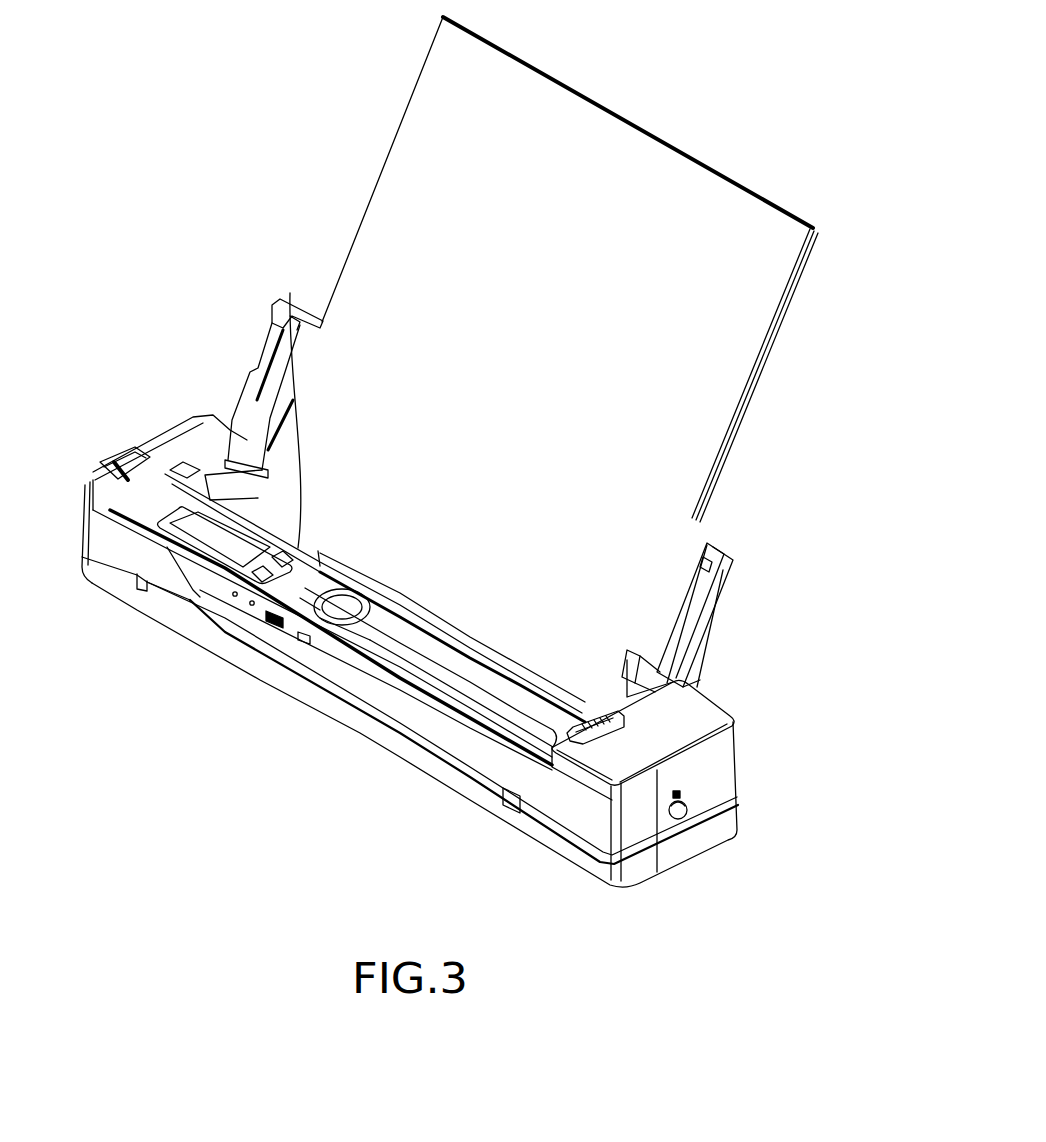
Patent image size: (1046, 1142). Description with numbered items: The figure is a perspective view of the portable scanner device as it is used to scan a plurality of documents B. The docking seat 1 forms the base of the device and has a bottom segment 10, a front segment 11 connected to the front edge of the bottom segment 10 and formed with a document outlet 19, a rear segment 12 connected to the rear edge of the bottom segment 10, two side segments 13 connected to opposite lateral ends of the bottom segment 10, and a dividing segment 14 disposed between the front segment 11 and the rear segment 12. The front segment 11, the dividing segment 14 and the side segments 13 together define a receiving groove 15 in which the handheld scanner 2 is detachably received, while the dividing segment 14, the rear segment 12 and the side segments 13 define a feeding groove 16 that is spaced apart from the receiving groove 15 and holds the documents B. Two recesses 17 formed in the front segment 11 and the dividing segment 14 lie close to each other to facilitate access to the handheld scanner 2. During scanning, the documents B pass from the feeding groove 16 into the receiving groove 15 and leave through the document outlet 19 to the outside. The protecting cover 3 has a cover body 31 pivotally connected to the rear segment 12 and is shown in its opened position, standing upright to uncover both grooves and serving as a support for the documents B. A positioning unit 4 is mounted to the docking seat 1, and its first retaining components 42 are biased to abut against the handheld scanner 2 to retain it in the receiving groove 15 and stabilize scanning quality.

The documents B is at (759, 214).
The docking seat 1 is at (744, 795).
The handheld scanner 2 is at (300, 593).
The protecting cover 3 is at (735, 545).
The cover body 31 is at (722, 571).
The positioning unit 4 is at (112, 458).
The first retaining component 42 is at (137, 498).
The bottom segment 10 is at (690, 860).
The front segment 11 is at (508, 805).
The rear segment 12 is at (742, 745).
The side segment 13 is at (170, 430).
The dividing segment 14 is at (217, 497).
The receiving groove 15 is at (187, 477).
The feeding groove 16 is at (253, 463).
The recess 17 is at (160, 652).
The document outlet 19 is at (200, 617).